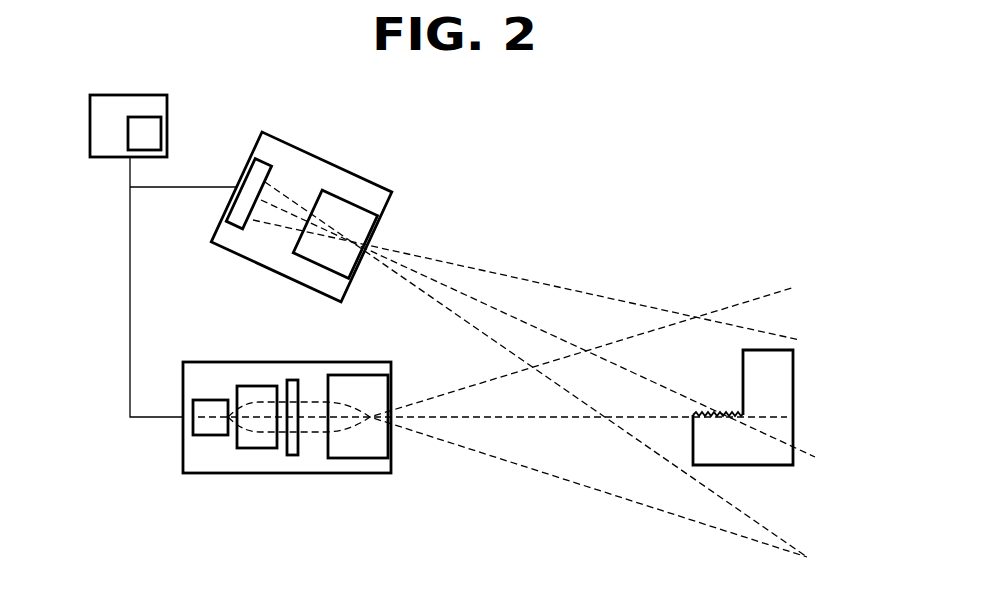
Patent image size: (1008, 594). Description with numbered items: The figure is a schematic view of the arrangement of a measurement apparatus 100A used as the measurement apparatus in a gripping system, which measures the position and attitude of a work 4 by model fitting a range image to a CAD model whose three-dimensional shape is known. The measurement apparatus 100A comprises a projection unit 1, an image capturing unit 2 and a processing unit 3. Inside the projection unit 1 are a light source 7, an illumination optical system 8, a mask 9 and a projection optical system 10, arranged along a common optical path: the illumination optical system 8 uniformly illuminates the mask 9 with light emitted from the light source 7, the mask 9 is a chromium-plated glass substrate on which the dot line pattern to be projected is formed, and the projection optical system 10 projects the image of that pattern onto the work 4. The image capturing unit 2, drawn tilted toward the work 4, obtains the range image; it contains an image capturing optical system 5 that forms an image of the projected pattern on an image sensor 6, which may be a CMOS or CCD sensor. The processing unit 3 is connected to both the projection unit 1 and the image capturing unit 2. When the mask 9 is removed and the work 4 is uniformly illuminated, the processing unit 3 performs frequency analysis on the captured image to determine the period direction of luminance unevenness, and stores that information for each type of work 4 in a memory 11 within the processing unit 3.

The measurement apparatus 100A is at (636, 192).
The projection unit 1 is at (223, 361).
The image capturing unit 2 is at (222, 249).
The processing unit 3 is at (103, 158).
The work 4 is at (796, 382).
The image capturing optical system 5 is at (341, 193).
The image sensor 6 is at (261, 157).
The light source 7 is at (213, 436).
The illumination optical system 8 is at (260, 449).
The mask 9 is at (296, 456).
The projection optical system 10 is at (361, 459).
The memory 11 is at (141, 117).